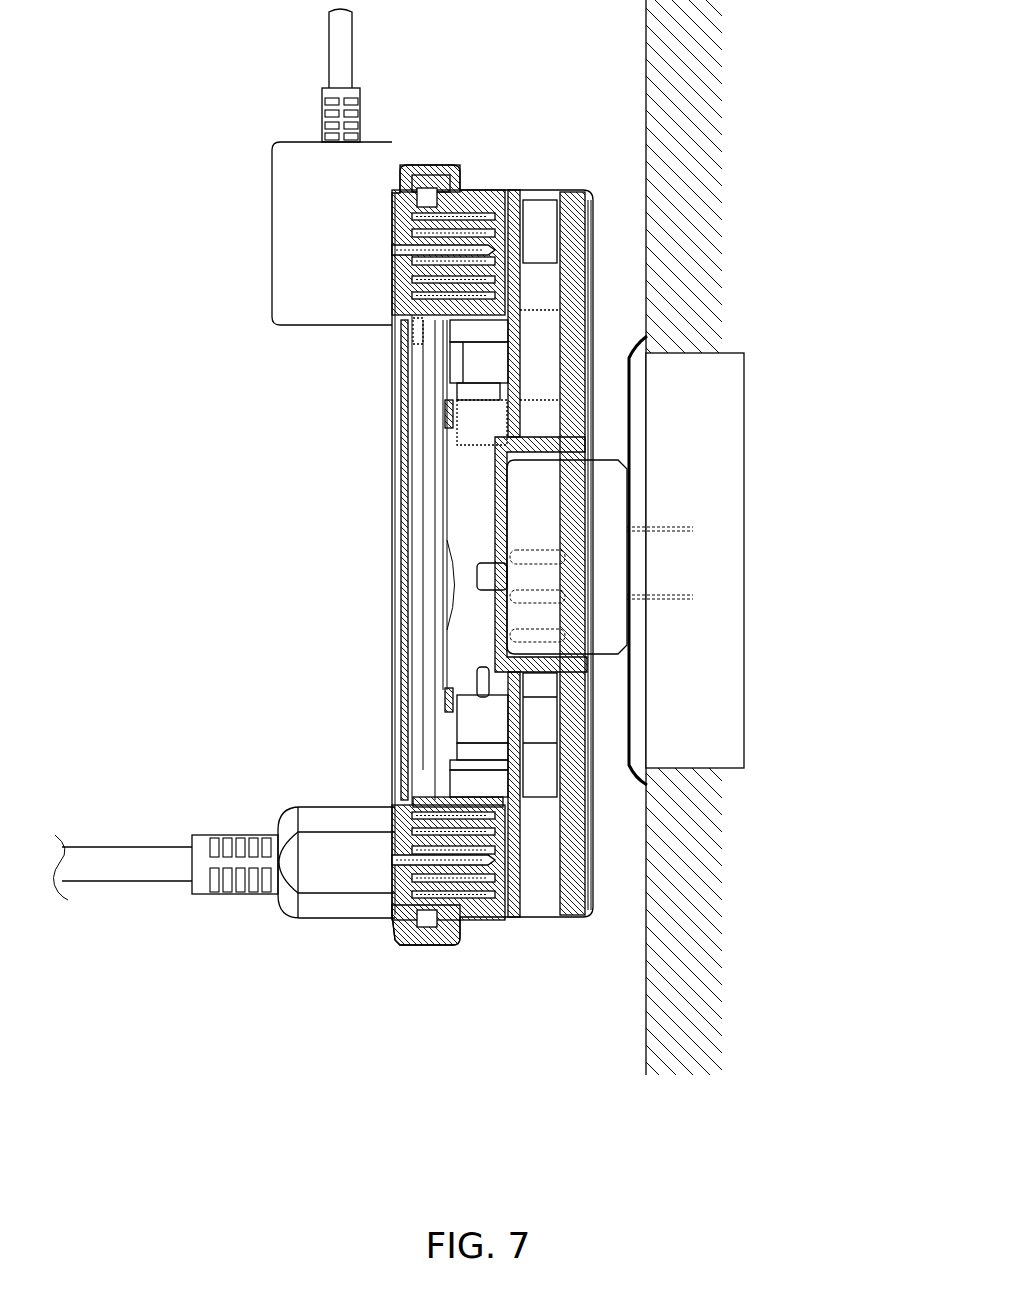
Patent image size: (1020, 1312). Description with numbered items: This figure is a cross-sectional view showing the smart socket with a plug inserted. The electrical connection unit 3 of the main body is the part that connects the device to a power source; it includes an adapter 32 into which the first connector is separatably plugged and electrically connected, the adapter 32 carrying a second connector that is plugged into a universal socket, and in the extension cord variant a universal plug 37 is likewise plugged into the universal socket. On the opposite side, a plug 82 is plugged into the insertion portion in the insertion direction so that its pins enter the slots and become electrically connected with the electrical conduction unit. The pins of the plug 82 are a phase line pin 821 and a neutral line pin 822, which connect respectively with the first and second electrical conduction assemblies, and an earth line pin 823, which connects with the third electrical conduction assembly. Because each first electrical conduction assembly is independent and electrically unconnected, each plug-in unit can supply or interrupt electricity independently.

The electrical connection unit 3 is at (485, 615).
The adapter 32 is at (523, 516).
The universal plug 37 is at (733, 372).
The plug 82 is at (333, 877).
The phase line pin 821 is at (468, 897).
The neutral line pin 822 is at (478, 829).
The earth line pin 823 is at (490, 862).